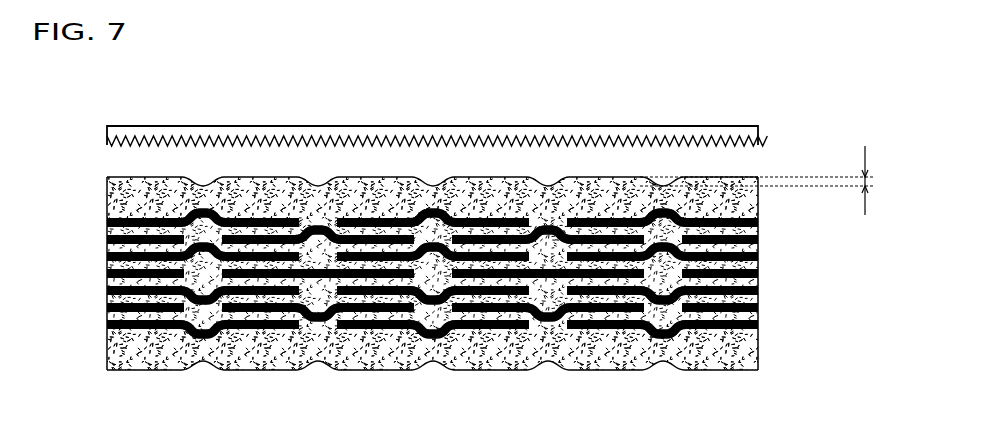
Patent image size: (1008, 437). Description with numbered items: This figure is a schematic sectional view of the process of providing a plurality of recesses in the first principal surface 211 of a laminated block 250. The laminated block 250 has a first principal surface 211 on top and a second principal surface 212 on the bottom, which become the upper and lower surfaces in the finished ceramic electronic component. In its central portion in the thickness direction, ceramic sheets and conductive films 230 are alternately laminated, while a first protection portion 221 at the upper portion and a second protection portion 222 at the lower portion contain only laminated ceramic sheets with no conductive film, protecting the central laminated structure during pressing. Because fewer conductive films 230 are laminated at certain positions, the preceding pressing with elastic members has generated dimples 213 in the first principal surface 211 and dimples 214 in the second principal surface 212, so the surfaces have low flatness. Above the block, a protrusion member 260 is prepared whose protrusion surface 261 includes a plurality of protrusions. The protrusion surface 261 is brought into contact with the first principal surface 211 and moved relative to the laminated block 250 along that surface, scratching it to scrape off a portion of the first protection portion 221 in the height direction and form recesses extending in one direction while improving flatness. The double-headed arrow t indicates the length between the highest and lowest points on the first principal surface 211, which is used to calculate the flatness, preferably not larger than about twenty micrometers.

The first principal surface 211 is at (262, 178).
The second principal surface 212 is at (265, 372).
The dimple 213 is at (430, 181).
The dimple 214 is at (434, 369).
The first protection portion 221 is at (593, 192).
The second protection portion 222 is at (710, 356).
The conductive film 230 is at (722, 218).
The laminated block 250 is at (767, 344).
The protrusion member 260 is at (730, 133).
The protrusion surface 261 is at (691, 145).
The flatness length t is at (765, 180).